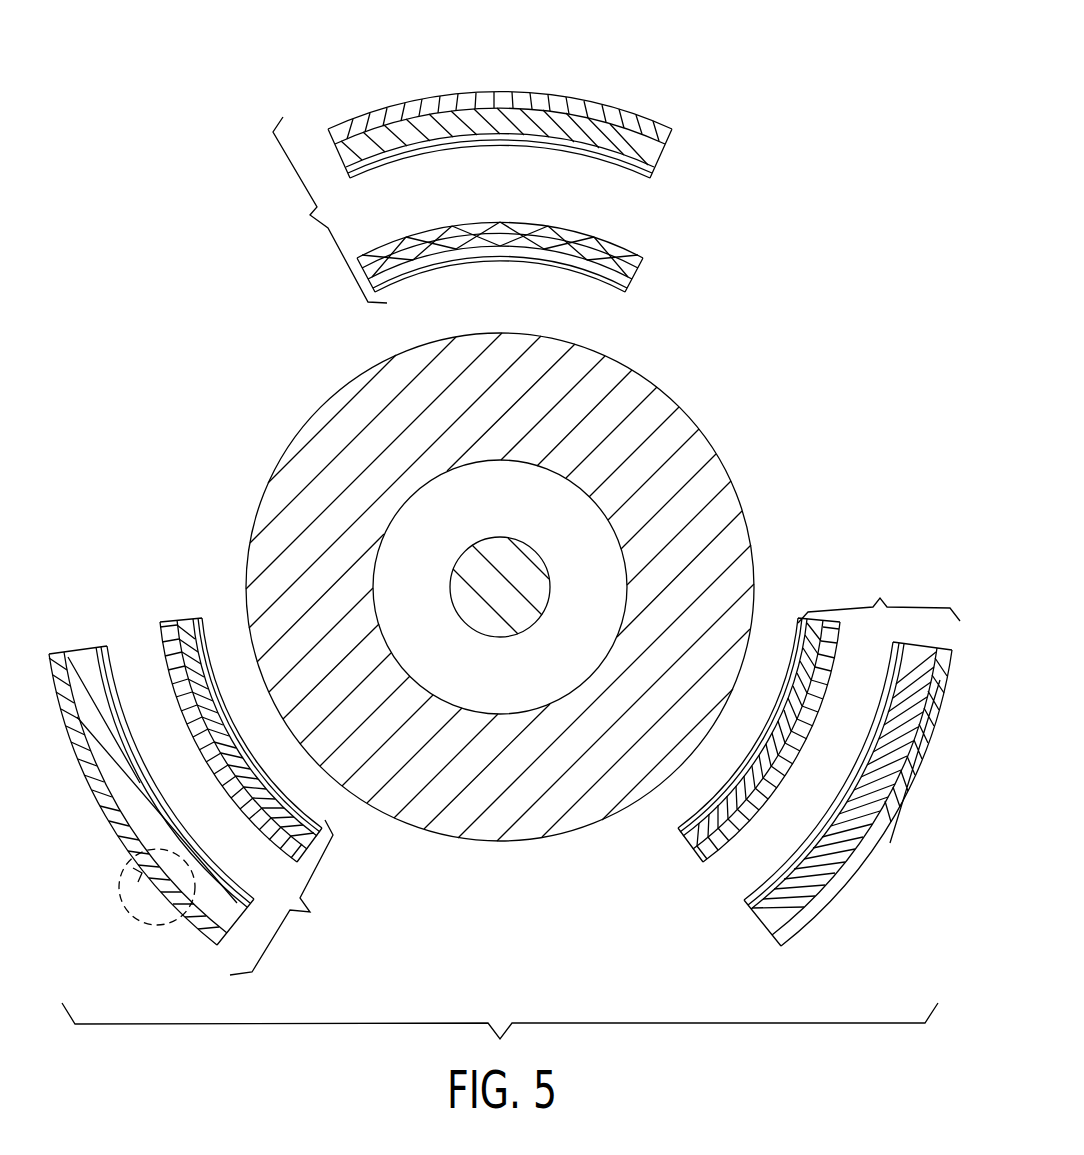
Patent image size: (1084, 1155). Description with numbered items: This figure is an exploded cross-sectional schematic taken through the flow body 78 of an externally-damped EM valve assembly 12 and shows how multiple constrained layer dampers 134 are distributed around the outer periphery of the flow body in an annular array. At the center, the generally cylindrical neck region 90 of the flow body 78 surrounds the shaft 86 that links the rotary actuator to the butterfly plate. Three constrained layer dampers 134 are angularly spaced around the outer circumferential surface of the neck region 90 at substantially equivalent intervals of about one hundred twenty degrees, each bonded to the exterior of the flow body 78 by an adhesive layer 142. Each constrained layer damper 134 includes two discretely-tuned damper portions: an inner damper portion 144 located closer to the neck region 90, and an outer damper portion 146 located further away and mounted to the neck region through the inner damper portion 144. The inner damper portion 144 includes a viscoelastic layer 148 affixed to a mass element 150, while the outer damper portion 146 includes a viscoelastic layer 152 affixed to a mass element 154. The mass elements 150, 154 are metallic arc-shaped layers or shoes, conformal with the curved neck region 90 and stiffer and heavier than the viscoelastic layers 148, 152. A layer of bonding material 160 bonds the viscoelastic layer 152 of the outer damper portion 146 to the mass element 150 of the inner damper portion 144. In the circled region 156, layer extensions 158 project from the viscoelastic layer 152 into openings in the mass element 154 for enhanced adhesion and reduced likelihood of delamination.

The EM valve assembly 12 is at (200, 272).
The flow body 78 is at (296, 432).
The shaft 86 is at (470, 558).
The neck region 90 is at (303, 566).
The constrained layer damper 134 is at (595, 546).
The adhesive layer 142 is at (603, 287).
The inner damper portion 144 is at (483, 267).
The outer damper portion 146 is at (512, 92).
The viscoelastic layer 148 is at (633, 282).
The mass element 150 is at (640, 262).
The viscoelastic layer 152 is at (655, 160).
The mass element 154 is at (668, 128).
The circled region 156 is at (140, 905).
The layer extensions 158 is at (139, 877).
The layer of bonding material 160 is at (494, 145).